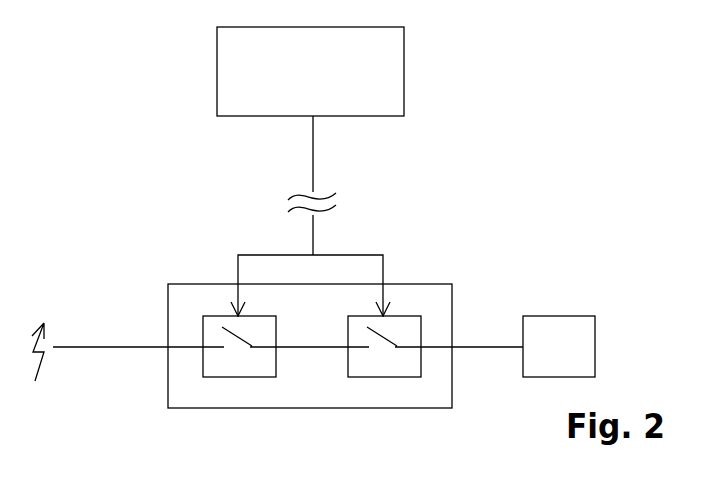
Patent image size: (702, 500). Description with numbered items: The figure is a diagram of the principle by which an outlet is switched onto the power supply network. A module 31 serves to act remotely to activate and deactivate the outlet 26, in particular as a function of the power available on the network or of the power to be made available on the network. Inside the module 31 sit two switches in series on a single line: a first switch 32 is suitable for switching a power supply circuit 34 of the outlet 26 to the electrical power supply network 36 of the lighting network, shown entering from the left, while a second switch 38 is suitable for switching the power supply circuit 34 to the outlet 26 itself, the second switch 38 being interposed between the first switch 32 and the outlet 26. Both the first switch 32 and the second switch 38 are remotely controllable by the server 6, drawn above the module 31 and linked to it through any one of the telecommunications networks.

The server 6 is at (404, 71).
The outlet 26 is at (558, 316).
The module 31 is at (430, 284).
The first switch 32 is at (247, 377).
The power supply circuit 34 is at (310, 347).
The electrical power supply network 36 is at (107, 347).
The second switch 38 is at (390, 377).